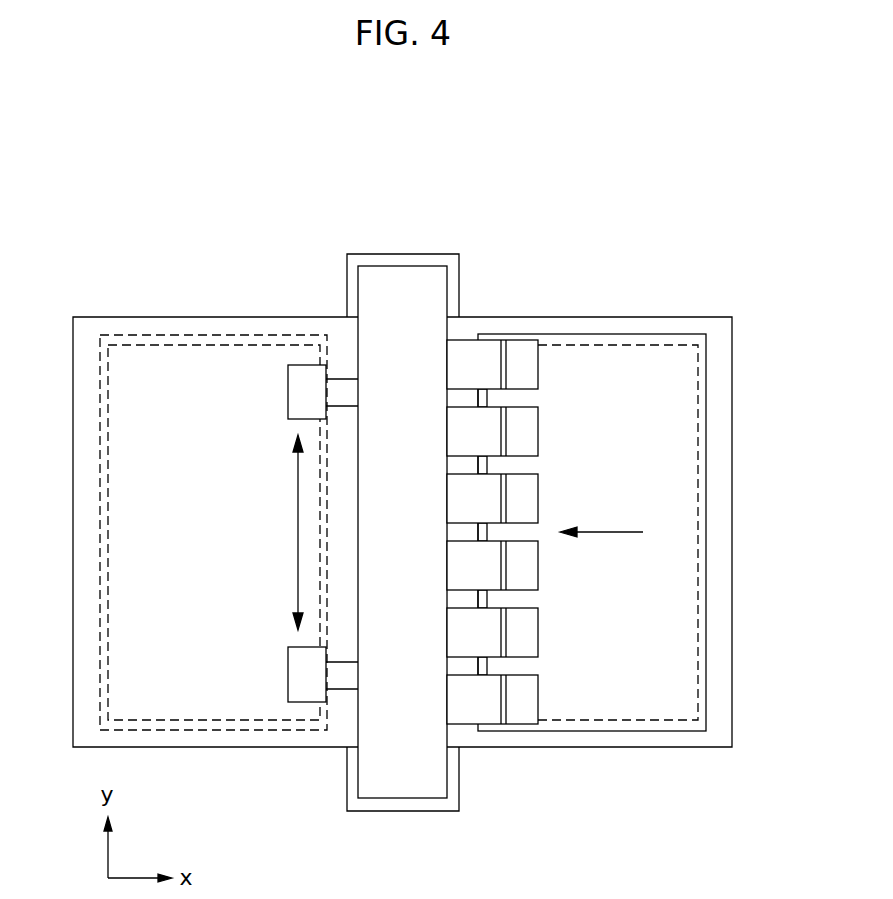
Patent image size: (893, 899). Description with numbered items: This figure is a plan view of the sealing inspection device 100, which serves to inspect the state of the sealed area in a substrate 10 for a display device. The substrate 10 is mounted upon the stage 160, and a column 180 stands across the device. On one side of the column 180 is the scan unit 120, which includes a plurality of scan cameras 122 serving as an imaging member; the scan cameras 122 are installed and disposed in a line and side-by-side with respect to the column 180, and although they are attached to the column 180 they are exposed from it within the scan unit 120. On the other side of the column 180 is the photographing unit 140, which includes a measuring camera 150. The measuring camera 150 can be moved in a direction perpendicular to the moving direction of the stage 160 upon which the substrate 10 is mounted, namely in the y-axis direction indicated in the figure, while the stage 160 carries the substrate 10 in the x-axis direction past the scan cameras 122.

The sealing inspection device 100 is at (675, 207).
The photographing unit 140 is at (347, 252).
The column 180 is at (402, 254).
The scan unit 120 is at (705, 250).
The stage 160 is at (617, 334).
The substrate 10 is at (672, 345).
The scan cameras 122 is at (523, 340).
The measuring camera 150 is at (300, 365).